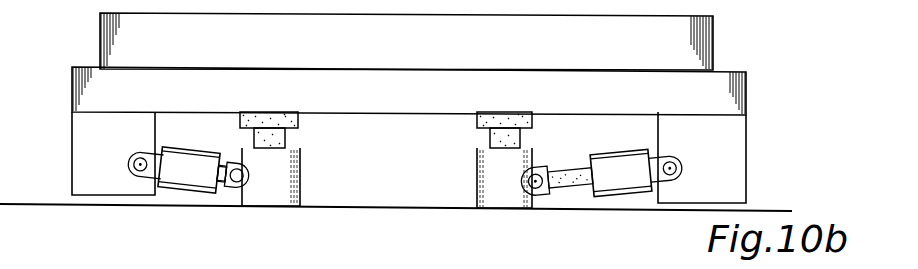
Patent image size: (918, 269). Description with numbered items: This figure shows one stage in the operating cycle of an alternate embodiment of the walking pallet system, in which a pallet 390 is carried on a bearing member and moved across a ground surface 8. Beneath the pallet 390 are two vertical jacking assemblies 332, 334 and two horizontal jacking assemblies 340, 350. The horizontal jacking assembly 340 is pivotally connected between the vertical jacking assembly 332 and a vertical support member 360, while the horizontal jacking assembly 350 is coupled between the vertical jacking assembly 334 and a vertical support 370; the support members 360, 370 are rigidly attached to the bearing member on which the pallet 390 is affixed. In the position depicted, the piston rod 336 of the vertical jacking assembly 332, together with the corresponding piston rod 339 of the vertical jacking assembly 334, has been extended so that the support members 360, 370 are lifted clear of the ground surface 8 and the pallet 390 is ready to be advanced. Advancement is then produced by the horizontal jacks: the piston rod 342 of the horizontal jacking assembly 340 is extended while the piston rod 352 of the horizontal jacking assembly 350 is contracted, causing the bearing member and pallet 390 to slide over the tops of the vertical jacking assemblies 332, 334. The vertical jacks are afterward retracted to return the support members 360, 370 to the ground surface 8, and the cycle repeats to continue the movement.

The ground surface 8 is at (408, 224).
The vertical jacking assembly 332 is at (277, 205).
The vertical jacking assembly 334 is at (498, 200).
The piston rod 336 is at (288, 138).
The right neck 339 is at (500, 137).
The horizontal jacking assembly 340 is at (190, 189).
The piston rod 342 is at (221, 162).
The horizontal jacking assembly 350 is at (622, 185).
The piston rod 352 is at (570, 172).
The vertical support member 360 is at (98, 185).
The vertical support 370 is at (733, 176).
The pallet 390 is at (700, 52).